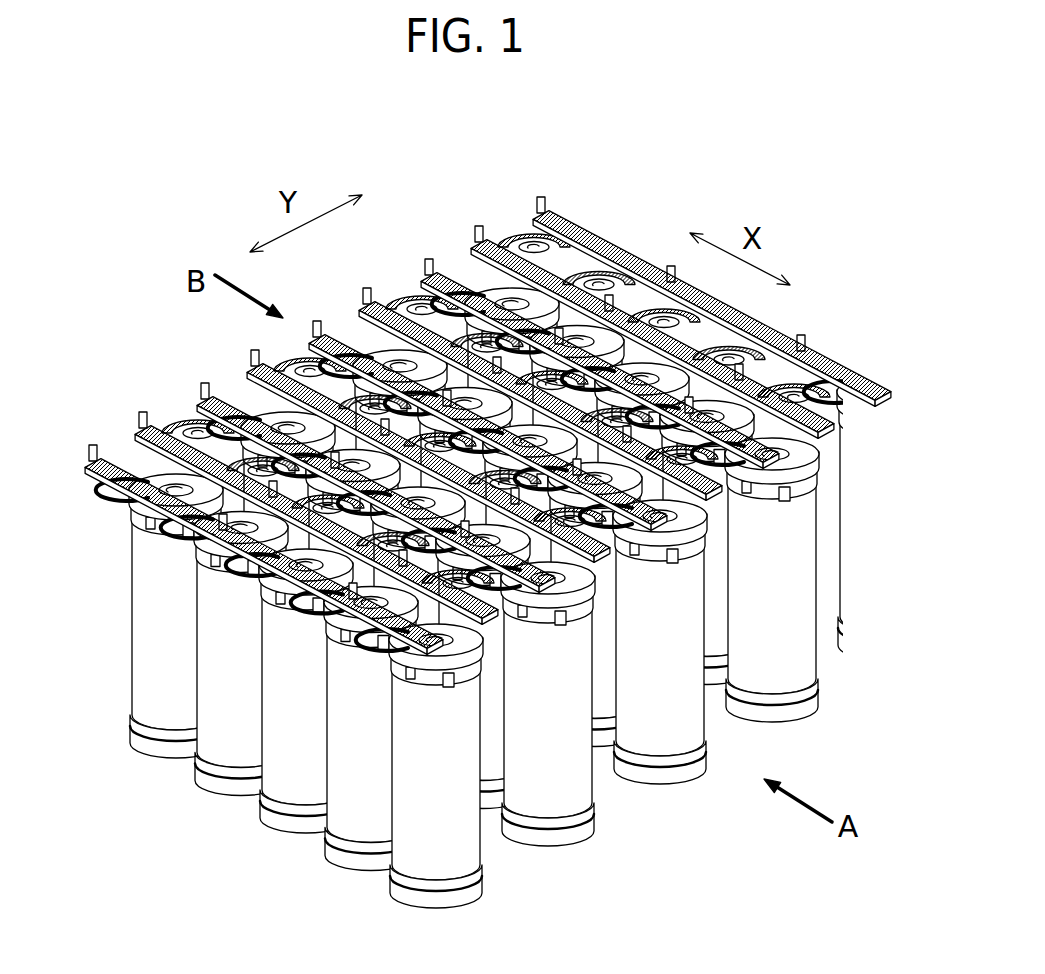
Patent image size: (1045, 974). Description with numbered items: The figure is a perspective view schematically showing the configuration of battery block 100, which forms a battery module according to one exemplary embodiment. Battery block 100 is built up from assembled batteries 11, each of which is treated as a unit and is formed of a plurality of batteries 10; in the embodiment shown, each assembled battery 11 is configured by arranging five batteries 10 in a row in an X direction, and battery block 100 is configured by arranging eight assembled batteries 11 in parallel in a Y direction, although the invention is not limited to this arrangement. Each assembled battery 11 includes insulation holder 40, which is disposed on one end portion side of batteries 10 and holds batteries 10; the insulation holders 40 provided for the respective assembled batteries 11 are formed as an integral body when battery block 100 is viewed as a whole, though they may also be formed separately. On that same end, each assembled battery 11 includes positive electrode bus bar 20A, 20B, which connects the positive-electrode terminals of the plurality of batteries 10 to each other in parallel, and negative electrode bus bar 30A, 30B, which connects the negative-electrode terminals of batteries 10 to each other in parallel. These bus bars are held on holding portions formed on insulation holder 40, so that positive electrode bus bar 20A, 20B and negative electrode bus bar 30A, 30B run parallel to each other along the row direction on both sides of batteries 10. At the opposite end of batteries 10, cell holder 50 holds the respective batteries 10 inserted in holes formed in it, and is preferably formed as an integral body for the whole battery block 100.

The battery block 100 is at (703, 165).
The battery 10 is at (150, 616).
The assembled battery 11 is at (519, 812).
The positive electrode bus bar 20A is at (640, 536).
The positive electrode bus bar 20B is at (651, 589).
The negative electrode bus bar 30A is at (429, 277).
The negative electrode bus bar 30B is at (500, 235).
The insulation holder 40 is at (138, 513).
The cell holder 50 is at (152, 763).